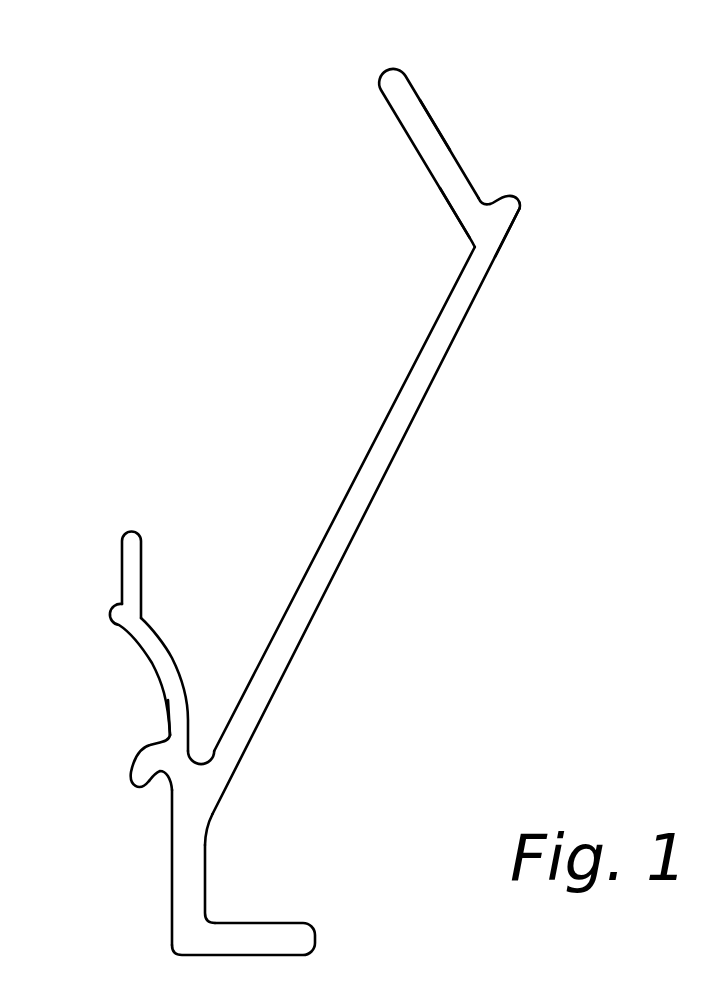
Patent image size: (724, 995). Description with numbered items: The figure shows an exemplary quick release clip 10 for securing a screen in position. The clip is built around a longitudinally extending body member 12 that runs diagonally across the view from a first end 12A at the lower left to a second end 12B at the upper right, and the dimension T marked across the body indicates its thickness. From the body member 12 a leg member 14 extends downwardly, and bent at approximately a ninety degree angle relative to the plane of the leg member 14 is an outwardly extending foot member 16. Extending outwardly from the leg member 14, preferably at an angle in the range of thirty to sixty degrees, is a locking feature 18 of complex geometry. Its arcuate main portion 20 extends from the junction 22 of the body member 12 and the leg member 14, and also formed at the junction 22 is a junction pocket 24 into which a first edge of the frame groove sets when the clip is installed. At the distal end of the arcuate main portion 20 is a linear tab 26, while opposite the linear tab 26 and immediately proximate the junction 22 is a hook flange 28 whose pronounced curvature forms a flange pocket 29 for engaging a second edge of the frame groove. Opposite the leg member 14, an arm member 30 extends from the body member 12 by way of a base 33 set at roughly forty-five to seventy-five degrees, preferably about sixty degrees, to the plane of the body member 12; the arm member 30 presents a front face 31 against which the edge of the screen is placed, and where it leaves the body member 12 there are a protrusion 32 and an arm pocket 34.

The quick release clip 10 is at (575, 553).
The body member 12 is at (383, 417).
The first end 12A is at (228, 784).
The second end 12B is at (506, 237).
The leg member 14 is at (205, 883).
The foot member 16 is at (288, 923).
The locking feature 18 is at (108, 677).
The arcuate main portion 20 is at (165, 645).
The junction 22 is at (185, 770).
The junction pocket 24 is at (197, 754).
The linear tab 26 is at (120, 547).
The hook flange 28 is at (131, 760).
The flange pocket 29 is at (160, 787).
The arm member 30 is at (424, 103).
The front face 31 is at (443, 137).
The protrusion 32 is at (519, 207).
The base 33 is at (472, 213).
The arm pocket 34 is at (482, 197).
The thickness T is at (358, 297).